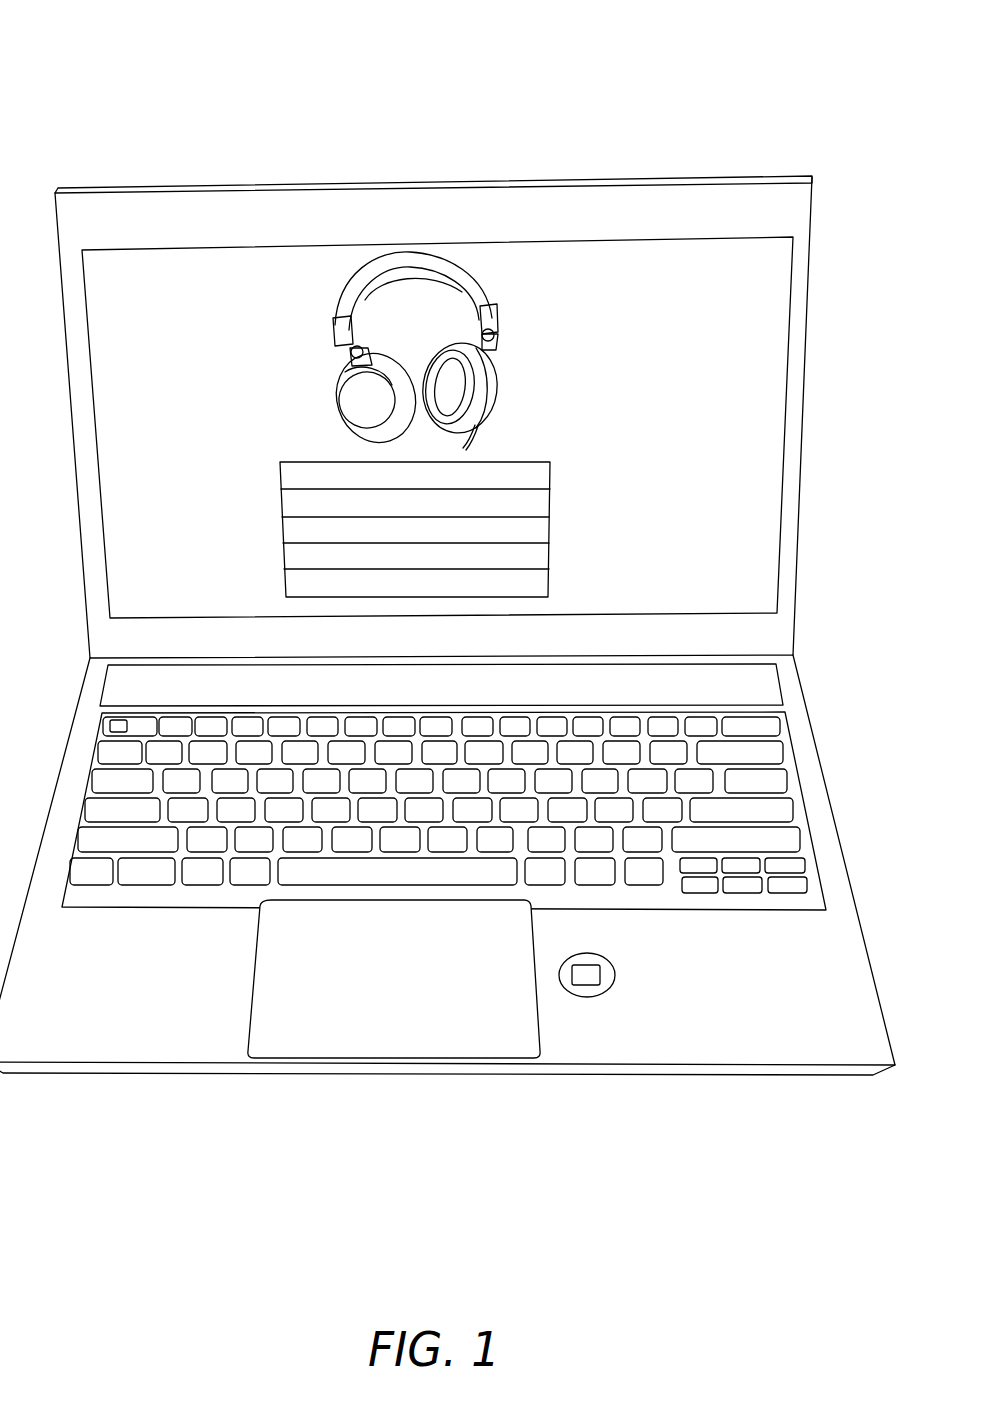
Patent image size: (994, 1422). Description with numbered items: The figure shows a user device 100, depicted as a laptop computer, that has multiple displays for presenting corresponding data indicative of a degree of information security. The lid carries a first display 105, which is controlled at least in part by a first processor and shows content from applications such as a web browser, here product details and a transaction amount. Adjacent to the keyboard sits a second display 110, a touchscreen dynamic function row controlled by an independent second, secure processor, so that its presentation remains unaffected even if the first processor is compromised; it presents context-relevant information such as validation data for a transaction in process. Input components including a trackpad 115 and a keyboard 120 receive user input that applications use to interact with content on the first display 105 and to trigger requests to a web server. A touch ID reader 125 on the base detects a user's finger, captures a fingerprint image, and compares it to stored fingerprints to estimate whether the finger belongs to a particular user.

The user device 100 is at (108, 76).
The first display 105 is at (722, 238).
The second display 110 is at (686, 666).
The trackpad 115 is at (247, 985).
The keyboard 120 is at (787, 731).
The touch ID reader 125 is at (590, 955).